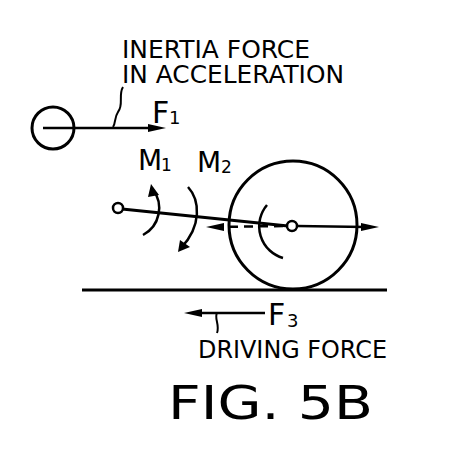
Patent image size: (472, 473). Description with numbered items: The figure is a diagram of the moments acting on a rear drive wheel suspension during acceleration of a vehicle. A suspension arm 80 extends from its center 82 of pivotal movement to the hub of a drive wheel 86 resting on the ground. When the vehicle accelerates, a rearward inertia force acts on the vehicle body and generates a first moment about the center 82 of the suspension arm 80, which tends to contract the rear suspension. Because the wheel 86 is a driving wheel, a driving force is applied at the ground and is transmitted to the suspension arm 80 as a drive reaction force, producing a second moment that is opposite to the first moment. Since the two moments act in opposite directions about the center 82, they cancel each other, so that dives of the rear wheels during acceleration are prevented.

The suspension arm 80 is at (167, 216).
The center of pivotal movement 82 is at (115, 214).
The drive wheel 86 is at (347, 208).